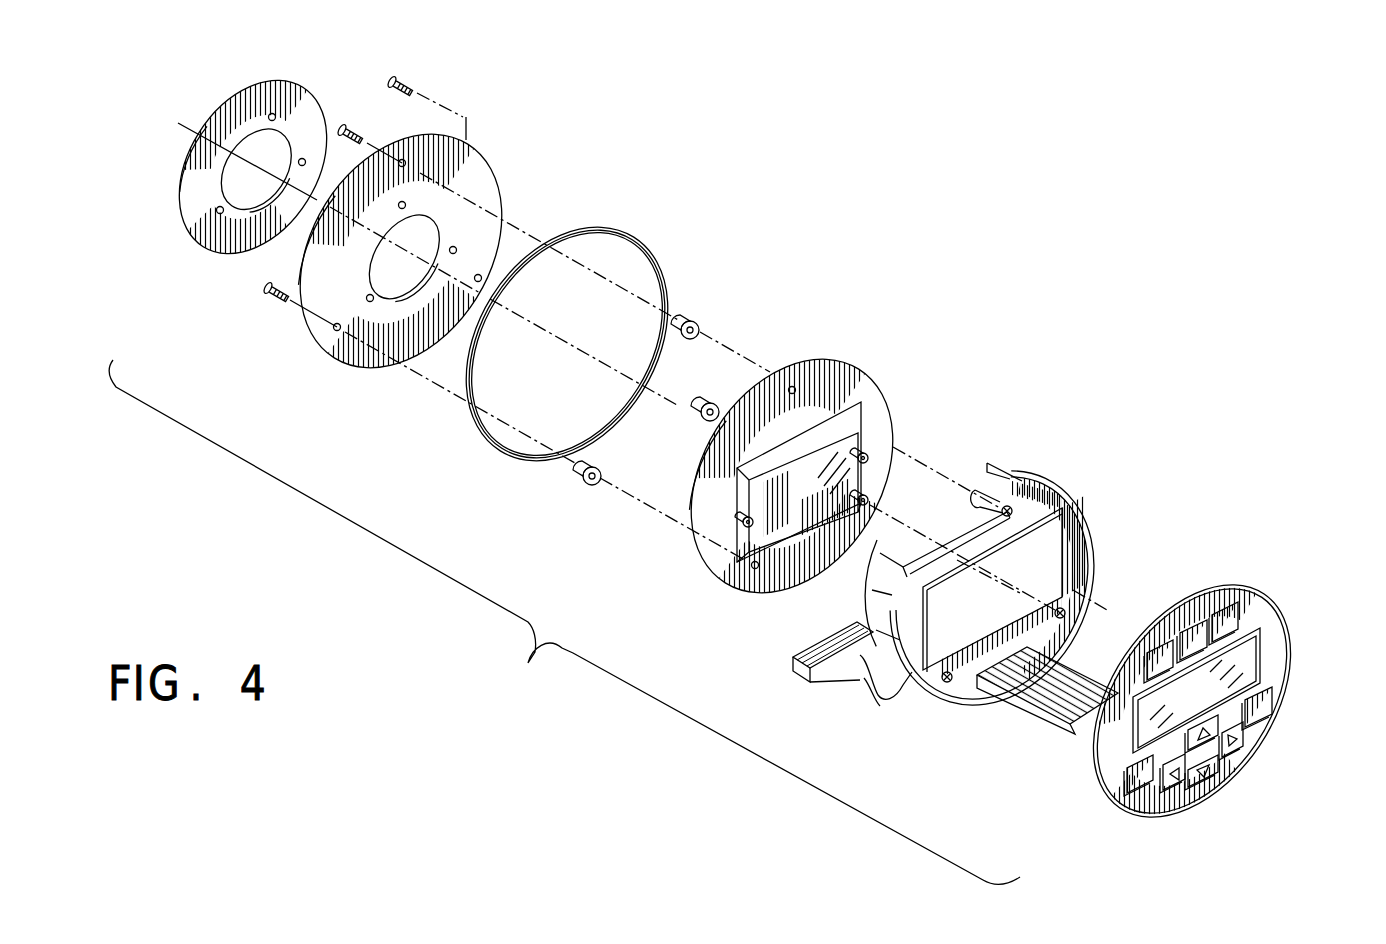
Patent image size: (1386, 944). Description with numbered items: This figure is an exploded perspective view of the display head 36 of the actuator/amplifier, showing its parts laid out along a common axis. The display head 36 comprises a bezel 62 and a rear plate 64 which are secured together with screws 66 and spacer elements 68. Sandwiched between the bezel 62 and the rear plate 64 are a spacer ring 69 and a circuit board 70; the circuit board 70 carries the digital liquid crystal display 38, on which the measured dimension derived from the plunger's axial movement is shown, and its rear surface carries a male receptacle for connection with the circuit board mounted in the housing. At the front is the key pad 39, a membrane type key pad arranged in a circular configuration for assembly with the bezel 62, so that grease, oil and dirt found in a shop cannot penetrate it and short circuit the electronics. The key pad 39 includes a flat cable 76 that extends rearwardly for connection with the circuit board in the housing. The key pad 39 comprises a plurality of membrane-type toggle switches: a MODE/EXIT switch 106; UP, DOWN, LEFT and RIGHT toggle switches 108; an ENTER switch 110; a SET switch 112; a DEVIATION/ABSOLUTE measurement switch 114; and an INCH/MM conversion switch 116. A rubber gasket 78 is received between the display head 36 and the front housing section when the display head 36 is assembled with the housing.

The display head 36 is at (519, 672).
The digital liquid crystal display 38 is at (777, 532).
The key pad 39 is at (1305, 630).
The bezel 62 is at (1080, 507).
The rear plate 64 is at (480, 182).
The screws 66 is at (386, 78).
The spacer elements 68 is at (697, 400).
The spacer ring 69 is at (622, 228).
The circuit board 70 is at (853, 367).
The flat cable 76 is at (863, 688).
The rubber gasket 78 is at (200, 228).
The MODE/EXIT switch 106 is at (1127, 793).
The UP, DOWN, LEFT and RIGHT toggle switches 108 is at (1210, 748).
The ENTER switch 110 is at (1268, 710).
The SET switch 112 is at (1240, 612).
The DEVIATION/ABSOLUTE measurement switch 114 is at (1191, 625).
The INCH/MM conversion switch 116 is at (1160, 650).